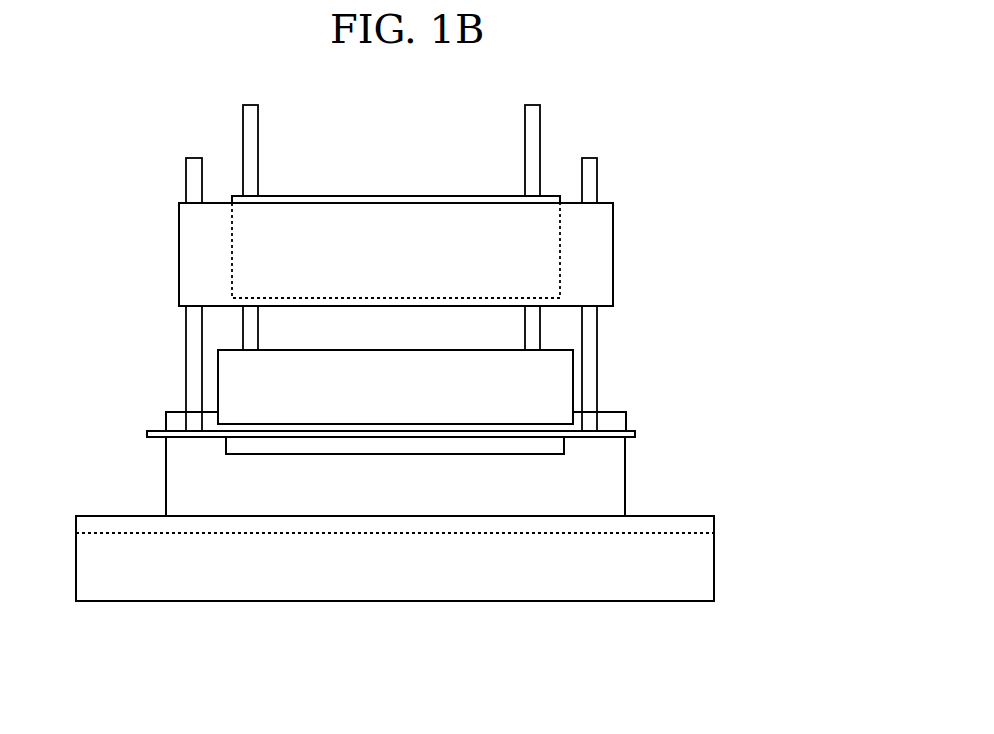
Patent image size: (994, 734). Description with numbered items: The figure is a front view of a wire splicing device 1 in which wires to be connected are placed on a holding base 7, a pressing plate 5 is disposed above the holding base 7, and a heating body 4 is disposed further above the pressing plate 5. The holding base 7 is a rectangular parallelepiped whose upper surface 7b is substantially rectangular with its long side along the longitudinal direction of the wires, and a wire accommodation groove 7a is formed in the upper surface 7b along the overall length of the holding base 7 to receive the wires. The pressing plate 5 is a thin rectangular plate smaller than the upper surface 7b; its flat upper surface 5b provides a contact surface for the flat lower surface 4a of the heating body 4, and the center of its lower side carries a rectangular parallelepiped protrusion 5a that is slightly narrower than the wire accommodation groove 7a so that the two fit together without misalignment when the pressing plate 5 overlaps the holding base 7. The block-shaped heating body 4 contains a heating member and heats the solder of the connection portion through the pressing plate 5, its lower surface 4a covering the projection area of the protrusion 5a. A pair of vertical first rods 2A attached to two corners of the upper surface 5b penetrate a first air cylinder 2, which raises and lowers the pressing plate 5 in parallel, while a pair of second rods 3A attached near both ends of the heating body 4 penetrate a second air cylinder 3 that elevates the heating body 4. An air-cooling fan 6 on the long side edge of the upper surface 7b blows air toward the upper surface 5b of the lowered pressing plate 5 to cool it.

The wire splicing device 1 is at (671, 99).
The first air cylinder 2 is at (613, 218).
The first rods 2A is at (185, 175).
The second air cylinder 3 is at (430, 196).
The second rods 3A is at (258, 122).
The heating body 4 is at (420, 358).
The lower surface of the heating body 4a is at (352, 425).
The pressing plate 5 is at (633, 428).
The protrusion 5a is at (557, 446).
The upper surface of the pressing plate 5b is at (608, 430).
The air-cooling fan 6 is at (617, 481).
The holding base 7 is at (703, 565).
The wire accommodation groove 7a is at (683, 533).
The upper surface of the holding base 7b is at (660, 516).